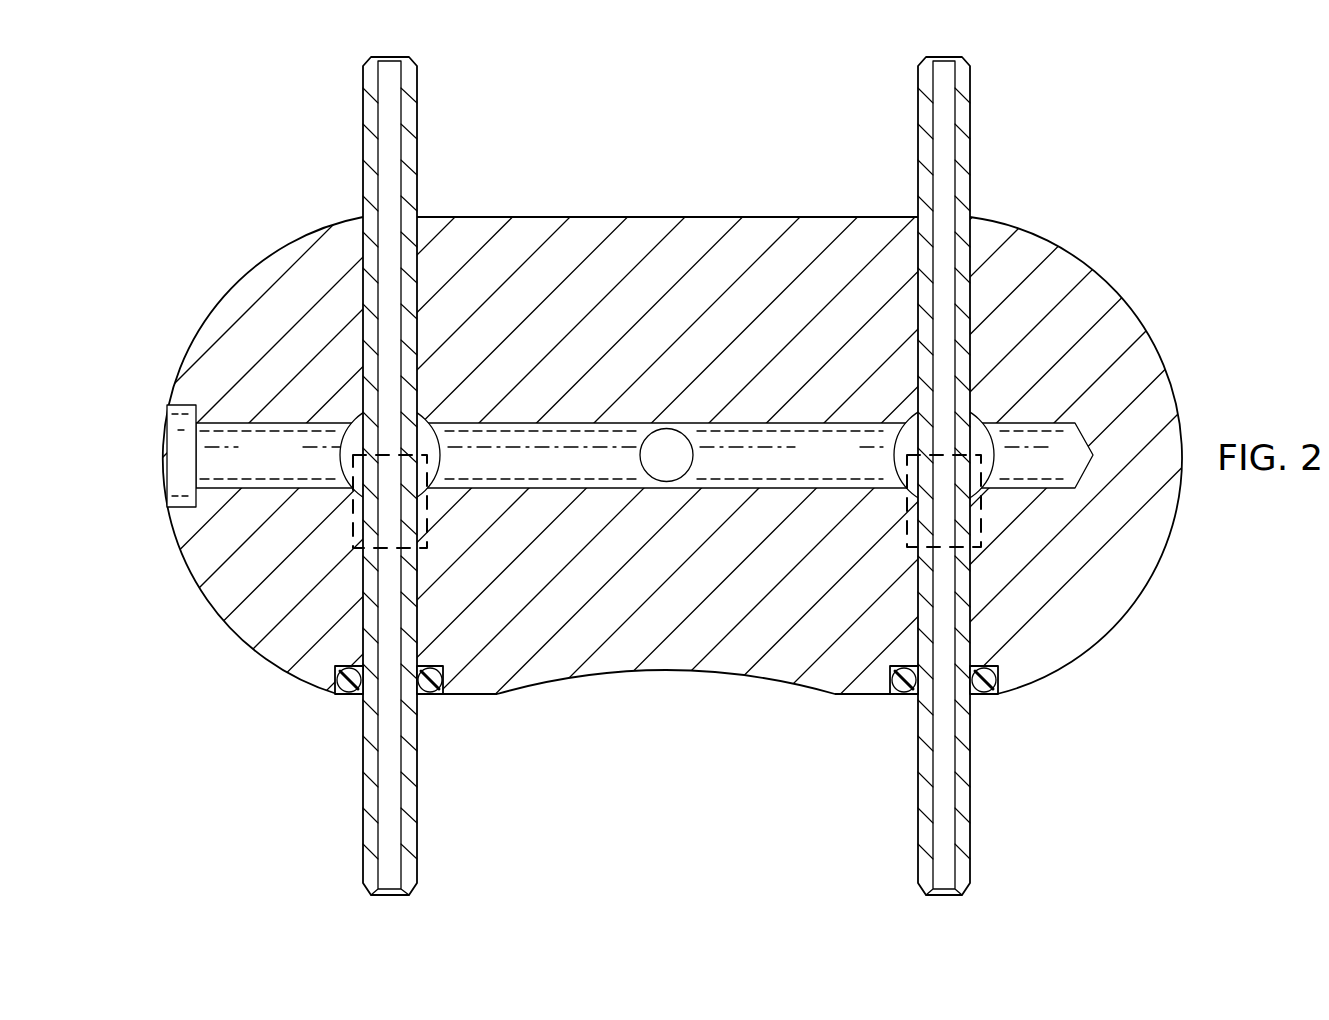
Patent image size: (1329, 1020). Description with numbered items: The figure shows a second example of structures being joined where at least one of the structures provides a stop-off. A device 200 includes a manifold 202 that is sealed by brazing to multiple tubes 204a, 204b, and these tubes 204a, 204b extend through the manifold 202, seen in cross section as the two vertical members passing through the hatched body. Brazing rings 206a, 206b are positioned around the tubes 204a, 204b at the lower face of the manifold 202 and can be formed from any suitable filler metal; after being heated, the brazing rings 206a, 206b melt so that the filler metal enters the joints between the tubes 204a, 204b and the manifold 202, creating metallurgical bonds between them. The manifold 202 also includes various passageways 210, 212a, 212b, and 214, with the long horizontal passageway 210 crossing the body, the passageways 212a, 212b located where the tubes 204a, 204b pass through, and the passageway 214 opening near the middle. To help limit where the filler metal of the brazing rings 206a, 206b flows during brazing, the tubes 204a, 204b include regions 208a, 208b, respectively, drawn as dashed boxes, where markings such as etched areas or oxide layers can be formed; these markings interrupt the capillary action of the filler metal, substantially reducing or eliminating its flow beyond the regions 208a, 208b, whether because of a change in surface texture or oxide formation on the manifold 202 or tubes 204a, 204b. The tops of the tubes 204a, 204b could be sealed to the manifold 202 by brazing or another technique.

The device 200 is at (1200, 320).
The manifold 202 is at (652, 217).
The tube 204a is at (372, 152).
The tube 204b is at (961, 152).
The brazing ring 206a is at (352, 696).
The brazing ring 206b is at (975, 697).
The region 208a is at (428, 515).
The region 208b is at (983, 515).
The passageway 210 is at (530, 421).
The passageway 212a is at (341, 467).
The passageway 212b is at (895, 468).
The passageway 214 is at (692, 453).